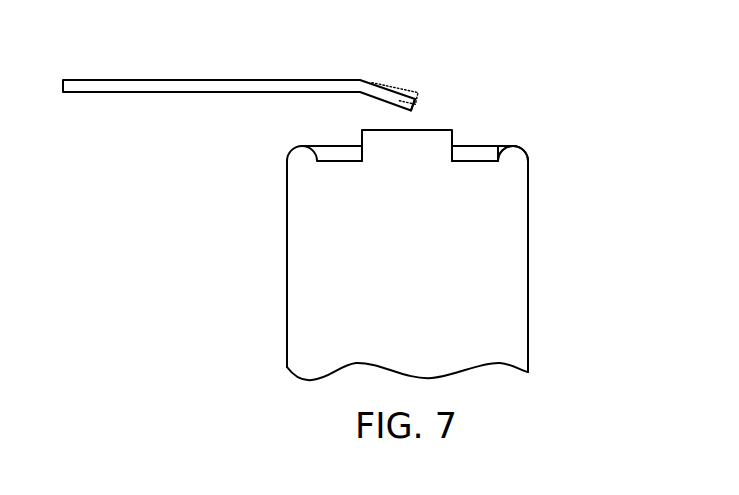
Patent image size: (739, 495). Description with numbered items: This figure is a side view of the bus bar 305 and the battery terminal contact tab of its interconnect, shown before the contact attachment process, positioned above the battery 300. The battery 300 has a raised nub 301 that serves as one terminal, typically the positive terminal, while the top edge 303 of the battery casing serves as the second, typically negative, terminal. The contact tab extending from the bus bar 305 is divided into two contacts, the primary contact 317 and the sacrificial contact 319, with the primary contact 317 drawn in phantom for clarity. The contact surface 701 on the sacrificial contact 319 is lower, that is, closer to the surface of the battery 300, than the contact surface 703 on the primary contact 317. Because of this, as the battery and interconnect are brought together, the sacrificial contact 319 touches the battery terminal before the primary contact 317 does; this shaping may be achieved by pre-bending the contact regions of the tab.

The battery 300 is at (428, 276).
The raised nub 301 is at (451, 129).
The top edge 303 is at (513, 144).
The bus bar 305 is at (108, 80).
The primary contact 317 is at (412, 90).
The sacrificial contact 319 is at (415, 123).
The contact surface 701 is at (397, 118).
The contact surface 703 is at (412, 112).